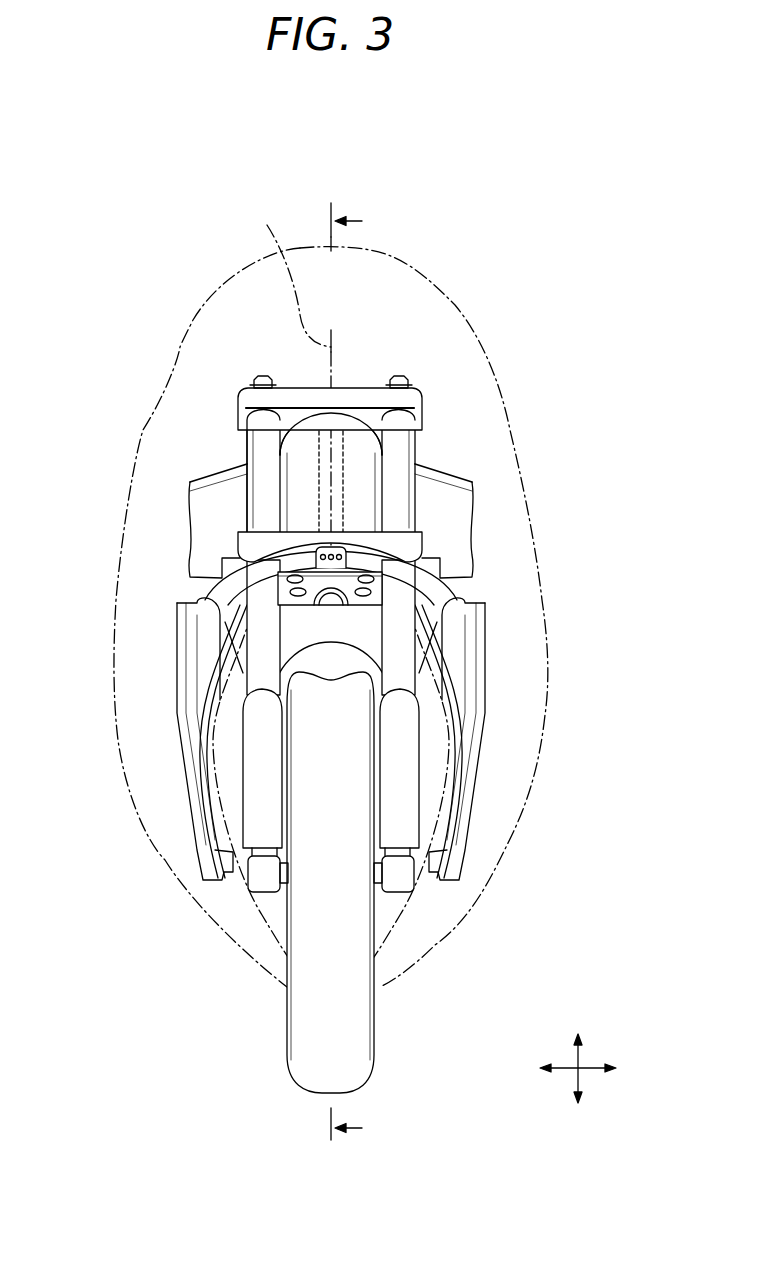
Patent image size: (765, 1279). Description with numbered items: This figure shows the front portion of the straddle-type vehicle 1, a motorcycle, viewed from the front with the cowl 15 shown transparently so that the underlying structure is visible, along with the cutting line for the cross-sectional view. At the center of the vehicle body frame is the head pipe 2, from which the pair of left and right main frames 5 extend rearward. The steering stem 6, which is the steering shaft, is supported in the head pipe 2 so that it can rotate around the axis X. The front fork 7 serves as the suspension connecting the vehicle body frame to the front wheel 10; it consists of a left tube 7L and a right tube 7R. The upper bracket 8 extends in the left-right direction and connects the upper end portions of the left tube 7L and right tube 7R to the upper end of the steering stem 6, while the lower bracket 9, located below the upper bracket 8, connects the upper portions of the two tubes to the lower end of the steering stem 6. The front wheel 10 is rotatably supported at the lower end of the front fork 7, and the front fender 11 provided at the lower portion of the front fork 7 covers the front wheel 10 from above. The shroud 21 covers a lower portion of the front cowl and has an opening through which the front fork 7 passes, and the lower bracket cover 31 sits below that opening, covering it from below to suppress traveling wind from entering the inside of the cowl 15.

The straddle-type vehicle 1 is at (163, 246).
The head pipe 2 is at (358, 500).
The main frames 5 is at (207, 517).
The steering stem 6 is at (342, 468).
The front fork 7 is at (324, 651).
The right tube 7R is at (253, 492).
The left tube 7L is at (403, 513).
The upper bracket 8 is at (363, 398).
The lower bracket 9 is at (247, 556).
The front wheel 10 is at (307, 1022).
The front fender 11 is at (345, 660).
The cowl 15 is at (180, 347).
The shroud 21 is at (437, 588).
The lower bracket cover 31 is at (308, 602).